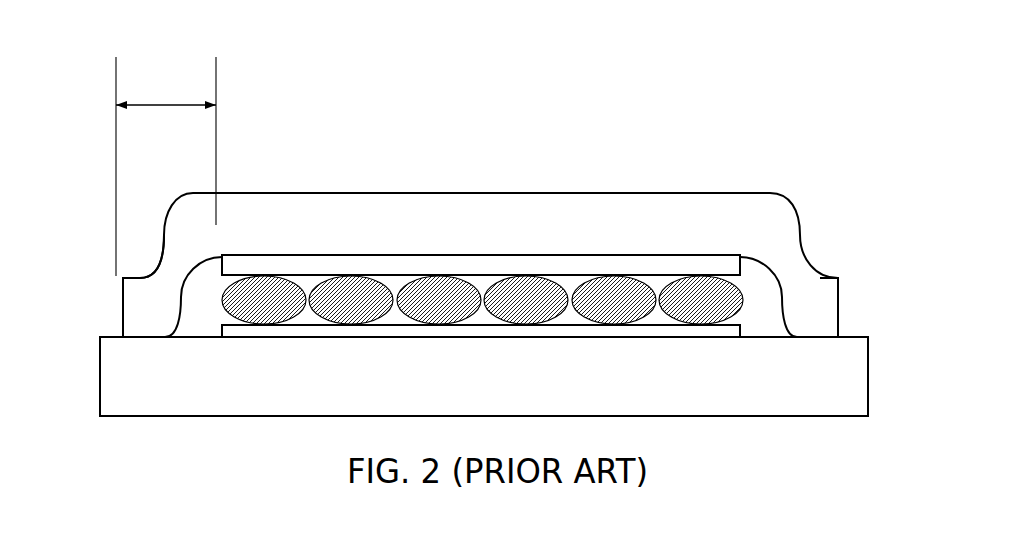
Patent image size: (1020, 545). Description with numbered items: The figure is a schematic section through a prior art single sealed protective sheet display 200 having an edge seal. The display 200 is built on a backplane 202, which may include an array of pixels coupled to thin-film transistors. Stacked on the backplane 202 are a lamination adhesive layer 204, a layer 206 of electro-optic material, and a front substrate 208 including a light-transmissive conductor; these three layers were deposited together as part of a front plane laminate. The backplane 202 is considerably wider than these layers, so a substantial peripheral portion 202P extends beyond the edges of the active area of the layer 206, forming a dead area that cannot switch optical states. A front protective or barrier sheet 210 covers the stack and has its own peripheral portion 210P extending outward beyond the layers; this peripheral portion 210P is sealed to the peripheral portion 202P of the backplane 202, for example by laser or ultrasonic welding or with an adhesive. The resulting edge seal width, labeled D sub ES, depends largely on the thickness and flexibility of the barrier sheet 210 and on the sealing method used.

The single sealed protective sheet display 200 is at (398, 130).
The backplane 202 is at (448, 327).
The peripheral portion of the backplane 202P is at (150, 390).
The lamination adhesive layer 204 is at (702, 333).
The layer of electro-optic material 206 is at (690, 300).
The front substrate 208 is at (655, 265).
The front protective or barrier sheet 210 is at (565, 223).
The peripheral portion of the front barrier sheet 210P is at (158, 298).